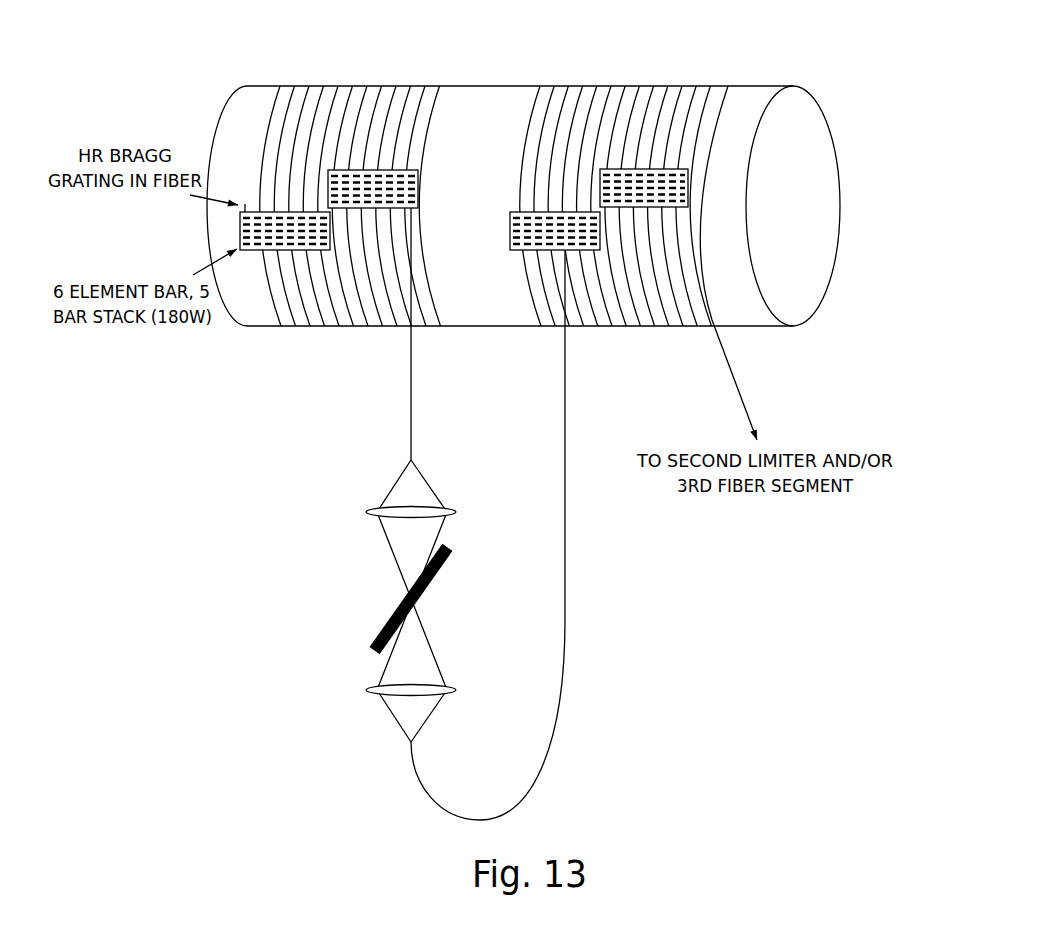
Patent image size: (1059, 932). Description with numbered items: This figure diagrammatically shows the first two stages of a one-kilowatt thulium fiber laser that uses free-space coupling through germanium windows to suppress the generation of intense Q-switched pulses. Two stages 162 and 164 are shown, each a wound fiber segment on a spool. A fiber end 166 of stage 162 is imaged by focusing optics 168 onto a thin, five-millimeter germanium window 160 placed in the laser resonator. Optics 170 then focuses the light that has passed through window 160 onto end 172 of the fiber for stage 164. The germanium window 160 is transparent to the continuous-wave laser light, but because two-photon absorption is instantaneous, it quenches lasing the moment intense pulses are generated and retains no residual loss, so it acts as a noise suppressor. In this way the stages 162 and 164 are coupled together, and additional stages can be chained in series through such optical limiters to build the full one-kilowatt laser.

The germanium window 160 is at (381, 640).
The first stage 162 is at (413, 58).
The second stage 164 is at (557, 86).
The fiber end 166 is at (411, 460).
The focusing optics 168 is at (368, 512).
The optics 170 is at (368, 690).
The end of the fiber 172 is at (411, 742).